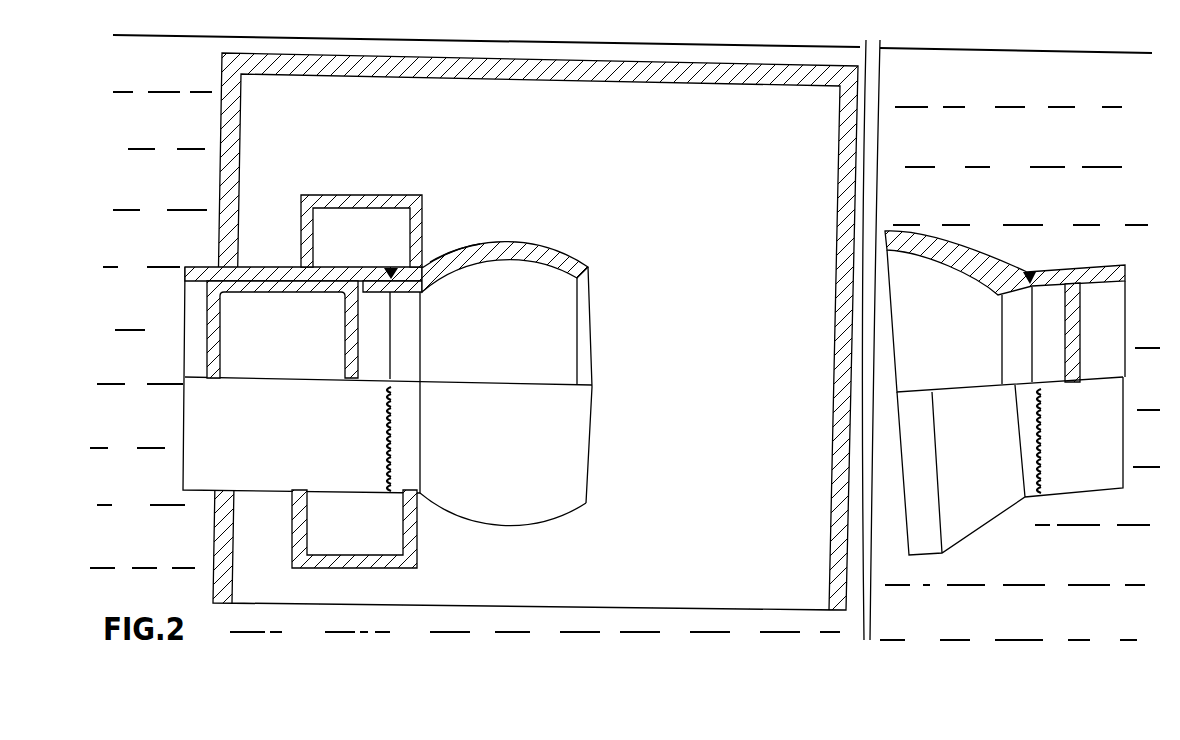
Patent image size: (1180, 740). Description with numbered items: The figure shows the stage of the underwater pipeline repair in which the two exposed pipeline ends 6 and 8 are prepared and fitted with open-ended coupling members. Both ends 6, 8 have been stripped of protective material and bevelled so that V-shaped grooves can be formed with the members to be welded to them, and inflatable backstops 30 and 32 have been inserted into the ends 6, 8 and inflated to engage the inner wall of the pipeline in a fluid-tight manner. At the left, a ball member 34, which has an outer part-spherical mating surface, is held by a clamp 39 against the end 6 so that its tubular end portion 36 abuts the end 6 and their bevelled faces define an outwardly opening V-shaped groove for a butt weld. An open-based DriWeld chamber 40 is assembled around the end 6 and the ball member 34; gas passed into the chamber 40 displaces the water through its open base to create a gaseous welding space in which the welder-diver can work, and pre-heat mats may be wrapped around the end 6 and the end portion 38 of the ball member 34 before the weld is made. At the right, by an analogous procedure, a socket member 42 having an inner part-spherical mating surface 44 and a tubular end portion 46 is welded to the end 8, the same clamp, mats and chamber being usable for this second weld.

The DriWeld chamber 40 is at (593, 80).
The clamp 39 is at (362, 200).
The inflatable backstop 30 is at (259, 283).
The pipeline end 6 is at (365, 266).
The ball member 34 is at (456, 232).
The end portion of ball member 38 is at (550, 245).
The tubular end portion 36 is at (408, 443).
The pipeline end 8 is at (997, 262).
The inner part spherical mating surface 44 is at (918, 255).
The inflatable backstop 32 is at (1102, 288).
The tubular end portion 46 is at (1030, 460).
The socket member 42 is at (988, 510).